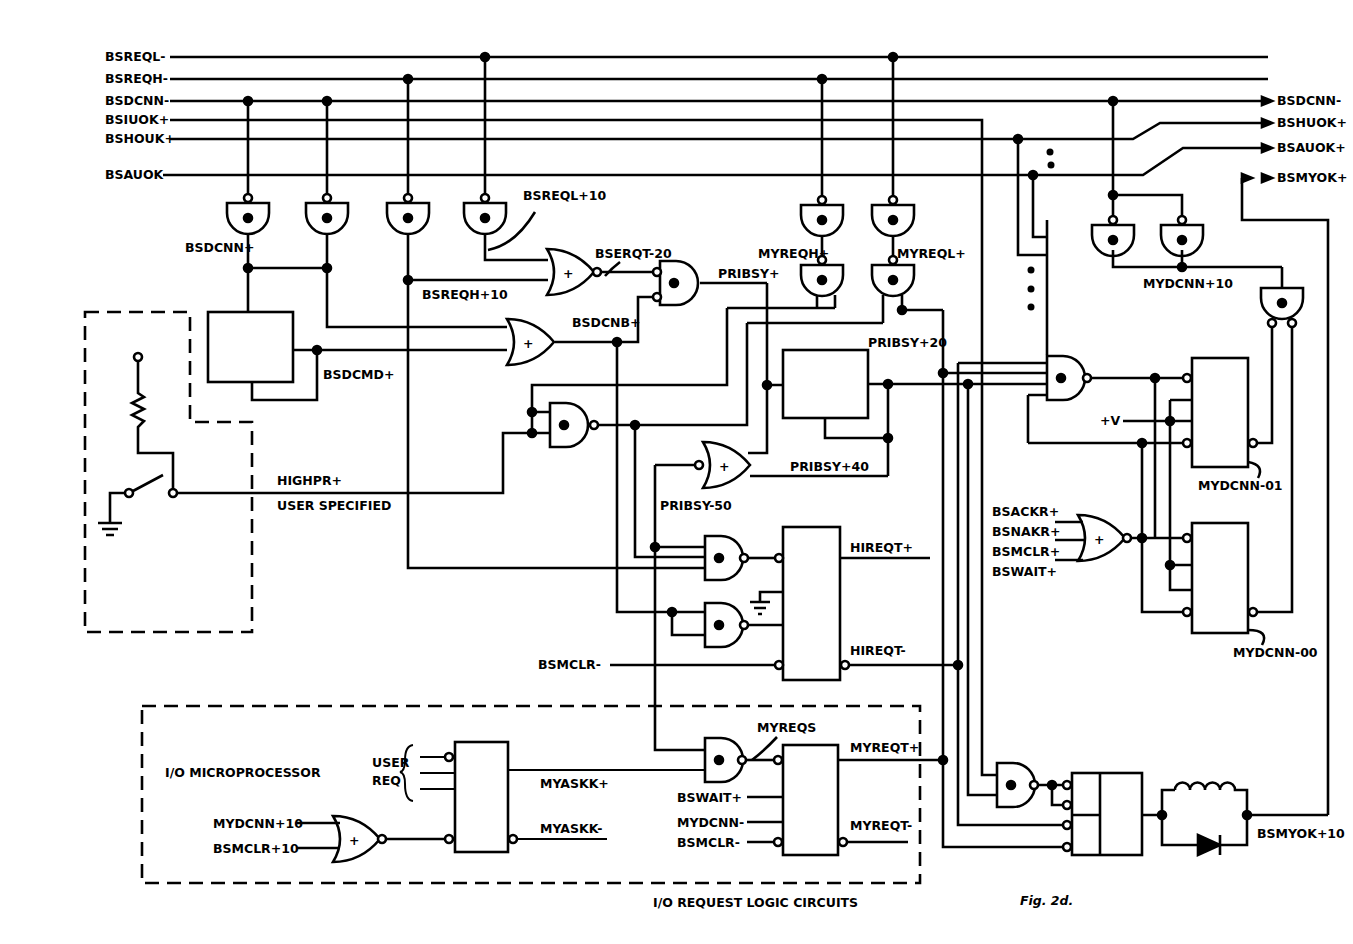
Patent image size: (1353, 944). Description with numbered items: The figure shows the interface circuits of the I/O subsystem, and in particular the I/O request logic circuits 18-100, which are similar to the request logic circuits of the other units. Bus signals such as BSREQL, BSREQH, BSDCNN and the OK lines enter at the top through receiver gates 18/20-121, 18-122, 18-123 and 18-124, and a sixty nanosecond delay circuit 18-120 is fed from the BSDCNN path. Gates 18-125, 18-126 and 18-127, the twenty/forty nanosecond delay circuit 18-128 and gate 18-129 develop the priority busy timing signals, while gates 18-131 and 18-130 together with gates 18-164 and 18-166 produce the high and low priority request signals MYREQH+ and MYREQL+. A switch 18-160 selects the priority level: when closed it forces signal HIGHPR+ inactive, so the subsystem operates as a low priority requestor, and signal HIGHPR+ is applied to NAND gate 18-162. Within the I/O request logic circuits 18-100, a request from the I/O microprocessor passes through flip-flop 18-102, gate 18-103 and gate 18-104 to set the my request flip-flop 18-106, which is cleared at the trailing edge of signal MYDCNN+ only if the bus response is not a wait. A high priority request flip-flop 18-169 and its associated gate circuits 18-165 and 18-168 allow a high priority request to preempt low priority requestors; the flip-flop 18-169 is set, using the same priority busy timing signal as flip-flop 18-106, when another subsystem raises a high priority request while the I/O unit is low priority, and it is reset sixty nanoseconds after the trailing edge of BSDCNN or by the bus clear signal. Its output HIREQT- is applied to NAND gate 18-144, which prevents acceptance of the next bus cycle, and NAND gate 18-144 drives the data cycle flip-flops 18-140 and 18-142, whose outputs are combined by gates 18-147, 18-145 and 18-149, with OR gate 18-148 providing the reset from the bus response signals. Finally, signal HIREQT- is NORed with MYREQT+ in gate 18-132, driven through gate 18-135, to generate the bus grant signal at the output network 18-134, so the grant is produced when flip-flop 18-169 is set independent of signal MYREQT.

The NAND gate (18/20-121) 121 is at (226, 217).
The NAND gate 122 is at (305, 216).
The NAND gate 123 is at (386, 216).
The NAND gate 124 is at (463, 216).
The 60 ns delay circuit 120 is at (300, 321).
The OR gate 125 is at (577, 246).
The AND gate 126 is at (712, 256).
The OR gate 127 is at (538, 362).
The 20/40 ns delay circuit 128 is at (868, 406).
The OR gate 129 is at (732, 445).
The NAND gate 130 is at (915, 220).
The NAND gate 131 is at (800, 220).
The AND gate 164 is at (858, 262).
The AND gate 166 is at (915, 278).
The NAND gate 162 is at (582, 443).
The gate circuit 165 is at (748, 536).
The gate circuit 168 is at (753, 648).
The high priority request flip-flop 169 is at (840, 588).
The NAND gate 144 is at (1097, 337).
The flip-flop 140 is at (1223, 357).
The flip-flop 142 is at (1240, 523).
The NAND gate 145 is at (1203, 238).
The NAND gate 147 is at (1093, 226).
The OR gate 148 is at (1100, 562).
The NAND gate 149 is at (1263, 296).
The switch 160 is at (143, 633).
The I/O request logic circuits 100 is at (322, 598).
The flip-flop 102 is at (510, 758).
The OR gate 103 is at (378, 826).
The NAND gate 104 is at (728, 738).
The my request flip-flop 106 is at (835, 855).
The gate 132 is at (1125, 773).
The inductor/diode output circuit 134 is at (1235, 793).
The NAND gate 135 is at (1027, 765).